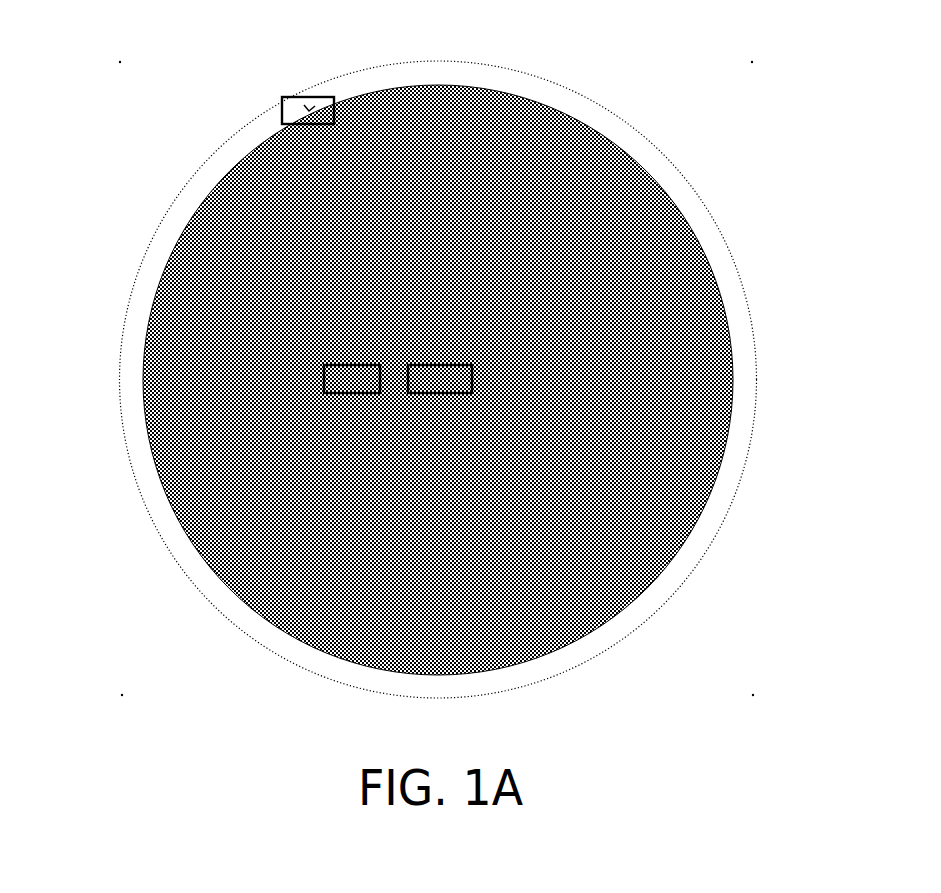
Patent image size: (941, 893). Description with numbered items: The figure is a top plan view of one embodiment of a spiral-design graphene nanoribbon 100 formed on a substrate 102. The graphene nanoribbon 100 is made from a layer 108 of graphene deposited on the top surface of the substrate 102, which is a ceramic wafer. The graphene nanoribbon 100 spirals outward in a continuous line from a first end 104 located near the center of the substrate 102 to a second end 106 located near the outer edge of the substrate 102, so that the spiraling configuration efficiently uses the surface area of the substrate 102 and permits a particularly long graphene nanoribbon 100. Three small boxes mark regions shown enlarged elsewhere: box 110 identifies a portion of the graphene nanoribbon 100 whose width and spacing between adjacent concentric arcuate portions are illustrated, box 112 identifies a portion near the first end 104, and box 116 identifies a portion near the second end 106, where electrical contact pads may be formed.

The graphene nanoribbon 100 is at (800, 114).
The substrate 102 is at (737, 272).
The first end 104 is at (442, 393).
The second end 106 is at (309, 110).
The layer of graphene 108 is at (581, 256).
The box 110 is at (343, 393).
The box 112 is at (405, 367).
The box 116 is at (282, 97).